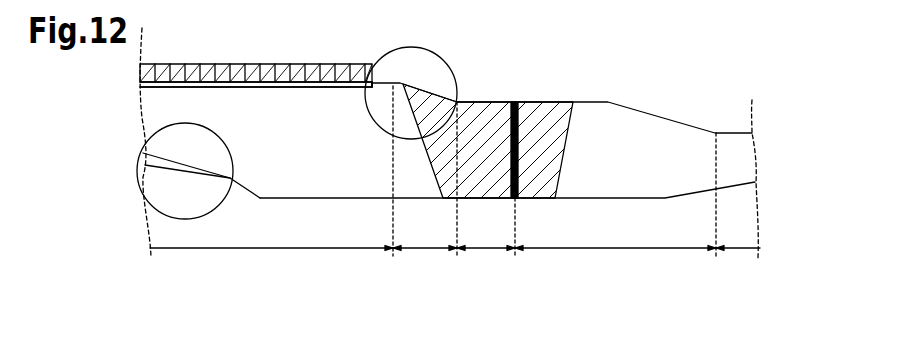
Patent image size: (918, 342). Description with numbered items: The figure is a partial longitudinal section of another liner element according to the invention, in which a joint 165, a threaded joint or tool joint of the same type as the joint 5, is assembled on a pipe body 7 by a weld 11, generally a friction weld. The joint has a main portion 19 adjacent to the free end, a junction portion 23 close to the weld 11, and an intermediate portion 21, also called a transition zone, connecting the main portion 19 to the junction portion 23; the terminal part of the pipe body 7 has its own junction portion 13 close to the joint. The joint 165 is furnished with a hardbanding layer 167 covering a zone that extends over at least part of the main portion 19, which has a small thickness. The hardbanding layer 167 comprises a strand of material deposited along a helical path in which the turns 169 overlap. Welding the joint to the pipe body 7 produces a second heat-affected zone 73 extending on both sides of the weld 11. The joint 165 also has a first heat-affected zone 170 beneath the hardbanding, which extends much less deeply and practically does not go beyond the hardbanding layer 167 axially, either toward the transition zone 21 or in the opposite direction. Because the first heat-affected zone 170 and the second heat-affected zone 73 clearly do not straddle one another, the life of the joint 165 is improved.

The joint 5 is at (329, 199).
The pipe body 7 is at (658, 117).
The weld 11 is at (515, 102).
The junction portion 13 is at (607, 248).
The main portion 19 is at (272, 248).
The intermediate portion 21 is at (425, 248).
The junction portion 23 is at (485, 248).
The second heat-affected zone 73 is at (546, 120).
The joint 165 is at (739, 73).
The hardbanding layer 167 is at (291, 63).
The turns 169 is at (163, 63).
The heat-affected zone 170 is at (164, 95).